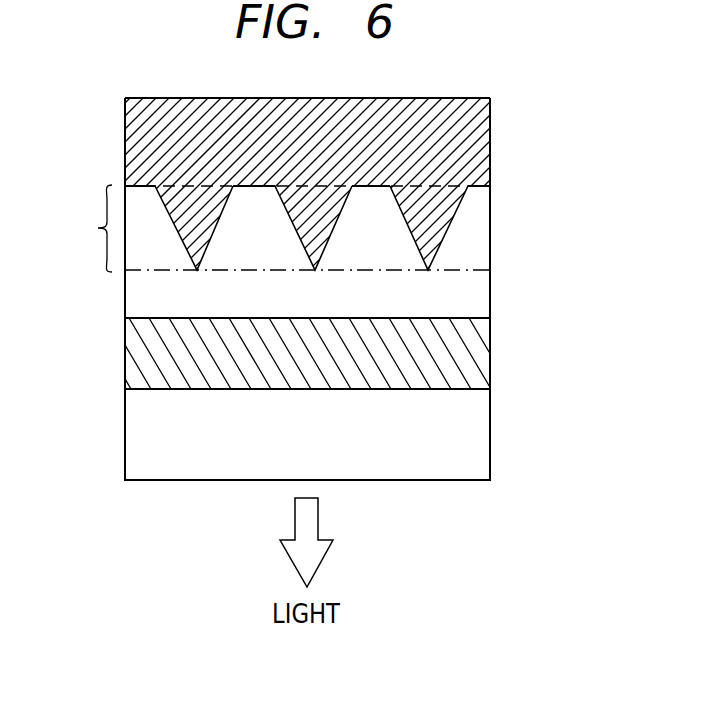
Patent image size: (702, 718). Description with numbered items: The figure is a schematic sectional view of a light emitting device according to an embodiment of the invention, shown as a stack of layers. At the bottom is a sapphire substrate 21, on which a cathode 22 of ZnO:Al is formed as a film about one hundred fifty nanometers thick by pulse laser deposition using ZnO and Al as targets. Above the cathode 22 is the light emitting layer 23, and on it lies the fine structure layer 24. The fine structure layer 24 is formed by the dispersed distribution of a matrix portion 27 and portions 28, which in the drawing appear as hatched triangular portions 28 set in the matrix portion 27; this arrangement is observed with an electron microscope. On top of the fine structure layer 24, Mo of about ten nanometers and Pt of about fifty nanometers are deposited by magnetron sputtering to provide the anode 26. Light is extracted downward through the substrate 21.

The substrate 21 is at (140, 435).
The cathode 22 is at (140, 363).
The light emitting layer 23 is at (140, 292).
The fine structure layer 24 is at (97, 228).
The anode 26 is at (143, 142).
The matrix portion 27 is at (475, 247).
The portions 28 is at (437, 212).